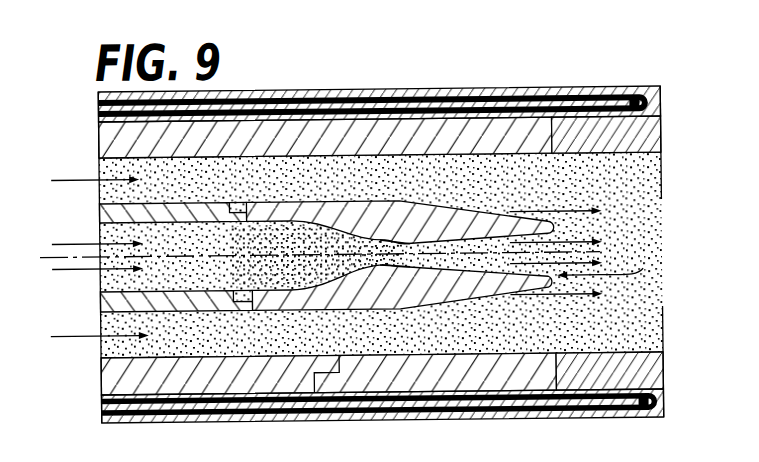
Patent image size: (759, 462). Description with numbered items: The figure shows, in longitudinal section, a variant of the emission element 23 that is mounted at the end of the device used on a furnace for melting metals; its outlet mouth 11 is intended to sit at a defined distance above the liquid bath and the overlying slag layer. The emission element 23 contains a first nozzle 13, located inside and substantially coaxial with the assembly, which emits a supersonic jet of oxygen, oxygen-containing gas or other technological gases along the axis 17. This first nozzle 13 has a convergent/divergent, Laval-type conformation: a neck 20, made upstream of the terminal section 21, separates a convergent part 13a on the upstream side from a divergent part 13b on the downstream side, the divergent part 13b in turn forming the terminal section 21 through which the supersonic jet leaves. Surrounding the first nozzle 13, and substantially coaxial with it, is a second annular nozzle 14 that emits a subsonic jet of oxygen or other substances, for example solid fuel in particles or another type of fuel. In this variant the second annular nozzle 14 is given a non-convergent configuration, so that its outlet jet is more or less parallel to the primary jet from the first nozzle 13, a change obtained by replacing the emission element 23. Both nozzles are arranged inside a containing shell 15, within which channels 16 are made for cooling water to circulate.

The outlet mouth 11 is at (676, 217).
The first nozzle 13 is at (370, 214).
The convergent part 13a is at (228, 293).
The divergent part 13b is at (480, 272).
The second annular nozzle 14 is at (437, 138).
The containing shell 15 is at (346, 93).
The channels 16 is at (284, 100).
The axis 17 is at (70, 257).
The neck 20 is at (393, 271).
The terminal section 21 is at (610, 259).
The emission element 23 is at (508, 86).